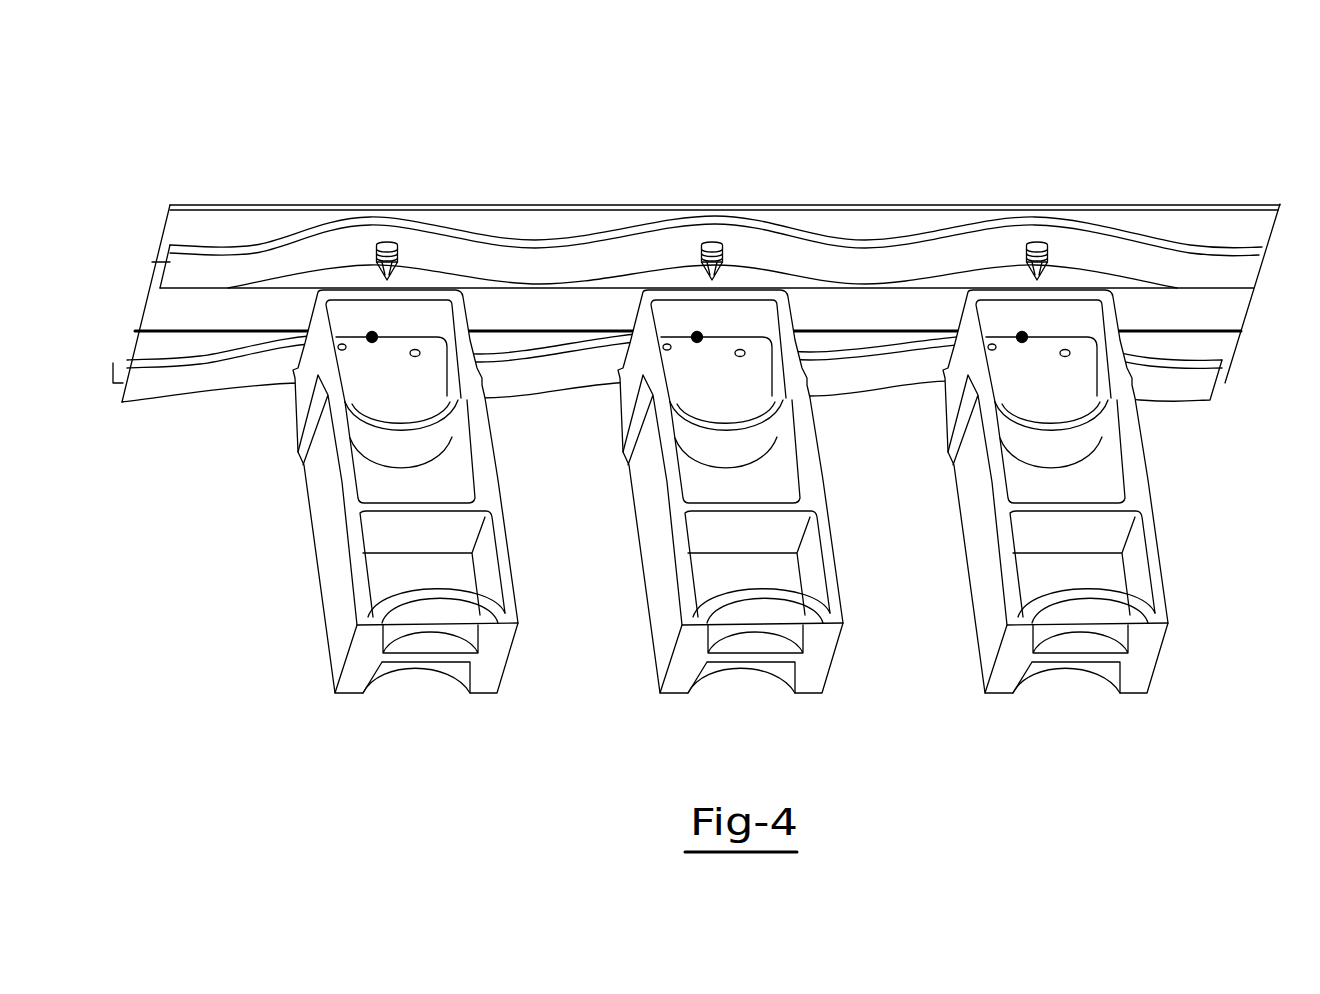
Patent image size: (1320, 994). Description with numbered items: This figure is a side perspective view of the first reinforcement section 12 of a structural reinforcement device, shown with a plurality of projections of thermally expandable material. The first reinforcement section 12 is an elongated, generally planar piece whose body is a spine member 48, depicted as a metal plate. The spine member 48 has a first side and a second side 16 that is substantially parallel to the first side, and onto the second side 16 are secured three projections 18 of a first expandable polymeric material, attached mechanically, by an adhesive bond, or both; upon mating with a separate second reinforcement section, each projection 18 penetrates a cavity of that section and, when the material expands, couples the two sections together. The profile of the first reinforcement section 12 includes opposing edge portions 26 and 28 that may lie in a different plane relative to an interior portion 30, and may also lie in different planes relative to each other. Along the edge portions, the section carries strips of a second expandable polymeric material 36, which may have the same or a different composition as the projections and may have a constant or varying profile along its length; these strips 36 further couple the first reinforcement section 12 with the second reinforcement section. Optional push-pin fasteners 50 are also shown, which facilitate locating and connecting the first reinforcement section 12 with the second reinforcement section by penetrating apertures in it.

The first reinforcement section 12 is at (1165, 237).
The second side 16 is at (552, 322).
The projection 18 is at (330, 532).
The edge portion 26 is at (170, 226).
The edge portion 28 is at (131, 352).
The interior portion 30 is at (160, 310).
The second expandable polymeric material 36 is at (860, 265).
The spine member 48 is at (1200, 318).
The push-pin fastener 50 is at (725, 252).